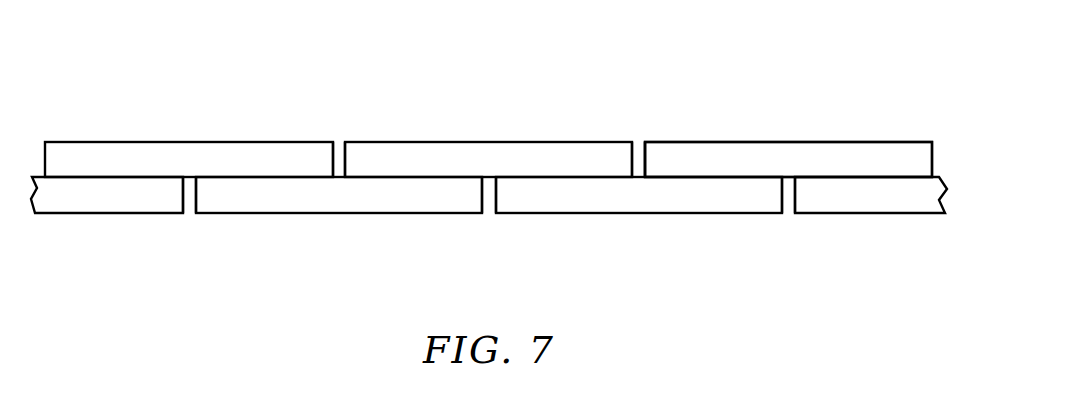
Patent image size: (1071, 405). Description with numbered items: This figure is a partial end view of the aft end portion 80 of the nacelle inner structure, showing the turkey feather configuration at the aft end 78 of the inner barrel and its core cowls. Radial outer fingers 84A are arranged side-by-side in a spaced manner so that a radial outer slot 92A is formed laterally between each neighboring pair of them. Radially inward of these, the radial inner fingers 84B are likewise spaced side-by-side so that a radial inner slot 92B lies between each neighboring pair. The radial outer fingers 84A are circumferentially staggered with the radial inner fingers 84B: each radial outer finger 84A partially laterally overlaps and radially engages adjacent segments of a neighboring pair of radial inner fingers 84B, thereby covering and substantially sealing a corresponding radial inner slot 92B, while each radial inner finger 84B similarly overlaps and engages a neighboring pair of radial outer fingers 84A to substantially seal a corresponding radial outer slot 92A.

The aft end 78 is at (917, 148).
The aft end portion 80 is at (849, 74).
The radial outer fingers 84A is at (189, 142).
The radial inner fingers 84B is at (98, 213).
The radial outer slots 92A is at (340, 142).
The radial inner slots 92B is at (189, 213).